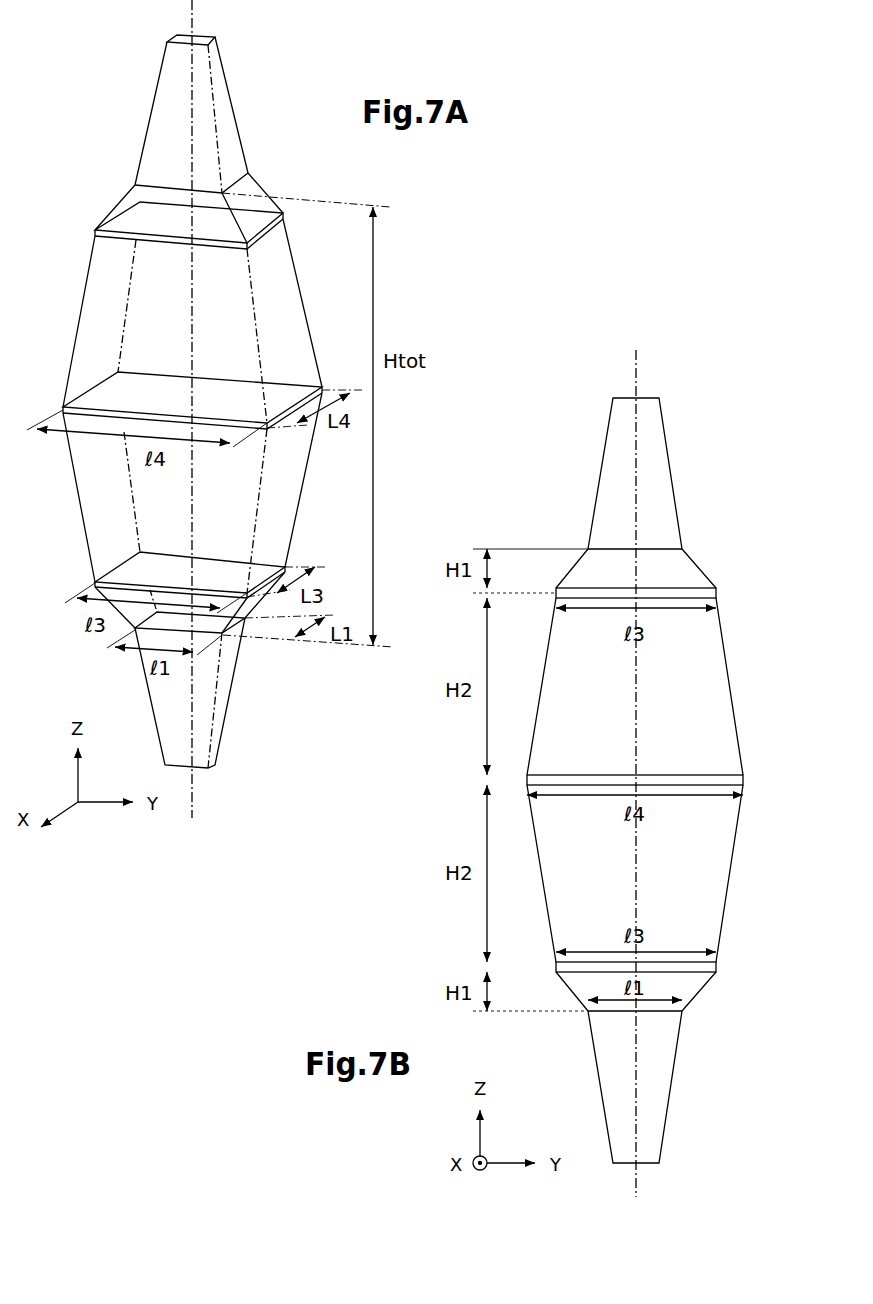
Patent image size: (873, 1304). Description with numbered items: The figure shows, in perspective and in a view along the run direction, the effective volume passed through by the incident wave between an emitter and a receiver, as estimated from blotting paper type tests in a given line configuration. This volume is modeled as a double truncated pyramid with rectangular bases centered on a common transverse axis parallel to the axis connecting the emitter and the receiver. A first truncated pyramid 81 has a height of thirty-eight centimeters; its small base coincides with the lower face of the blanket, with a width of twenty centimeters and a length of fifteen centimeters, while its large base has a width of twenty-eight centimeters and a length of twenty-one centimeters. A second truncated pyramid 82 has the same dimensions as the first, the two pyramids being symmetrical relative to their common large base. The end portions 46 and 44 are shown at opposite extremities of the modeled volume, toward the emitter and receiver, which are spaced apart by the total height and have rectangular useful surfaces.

In FIG. 7A, the upper tapered end portion 46 is at (218, 100).
In FIG. 7B, the upper tapered end portion 46 is at (662, 493).
In FIG. 7A, the second truncated pyramid 82 is at (148, 320).
In FIG. 7B, the second truncated pyramid 82 is at (718, 703).
In FIG. 7A, the first truncated pyramid 81 is at (152, 503).
In FIG. 7B, the first truncated pyramid 81 is at (720, 857).
In FIG. 7A, the lower tapered end portion 44 is at (222, 717).
In FIG. 7B, the lower tapered end portion 44 is at (662, 1065).